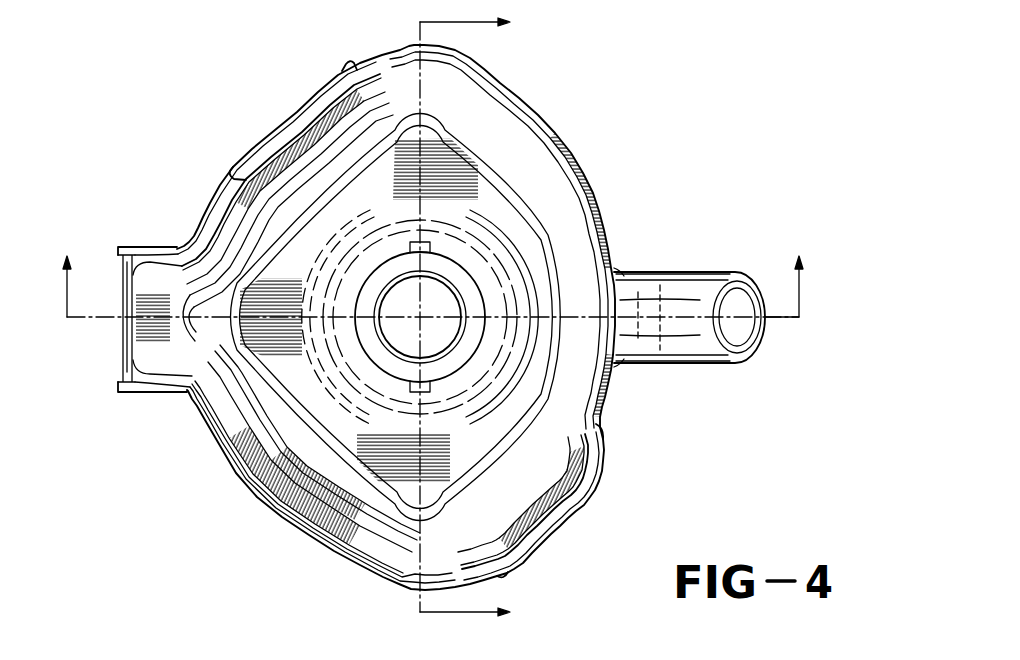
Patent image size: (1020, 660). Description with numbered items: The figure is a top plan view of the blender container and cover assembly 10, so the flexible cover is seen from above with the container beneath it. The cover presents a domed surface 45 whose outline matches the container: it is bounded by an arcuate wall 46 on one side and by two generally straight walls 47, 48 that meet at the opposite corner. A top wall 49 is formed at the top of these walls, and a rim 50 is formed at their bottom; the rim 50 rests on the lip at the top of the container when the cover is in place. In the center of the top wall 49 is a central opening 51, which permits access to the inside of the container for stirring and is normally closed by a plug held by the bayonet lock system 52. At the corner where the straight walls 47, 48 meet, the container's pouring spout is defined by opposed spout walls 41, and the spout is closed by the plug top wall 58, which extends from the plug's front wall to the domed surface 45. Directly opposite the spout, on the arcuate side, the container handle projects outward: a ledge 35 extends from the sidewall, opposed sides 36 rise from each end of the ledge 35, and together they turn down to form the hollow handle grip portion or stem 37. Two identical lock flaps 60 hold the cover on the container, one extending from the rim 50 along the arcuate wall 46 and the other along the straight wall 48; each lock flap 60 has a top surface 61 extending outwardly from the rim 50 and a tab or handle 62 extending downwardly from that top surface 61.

The blender container and cover assembly 10 is at (128, 106).
The ledge 35 is at (680, 297).
The sides 36 is at (670, 272).
The handle grip portion or stem 37 is at (720, 307).
The spout walls 41 is at (132, 247).
The domed surface 45 is at (330, 508).
The arcuate wall 46 is at (443, 300).
The straight wall 47 is at (285, 443).
The straight wall 48 is at (223, 240).
The top wall 49 is at (372, 192).
The rim 50 is at (545, 135).
The central opening 51 is at (552, 200).
The bayonet lock system 52 is at (372, 285).
The plug top wall 58 is at (158, 340).
The lock flaps 60 is at (281, 108).
The top surface 61 is at (264, 163).
The tab or handle 62 is at (268, 125).